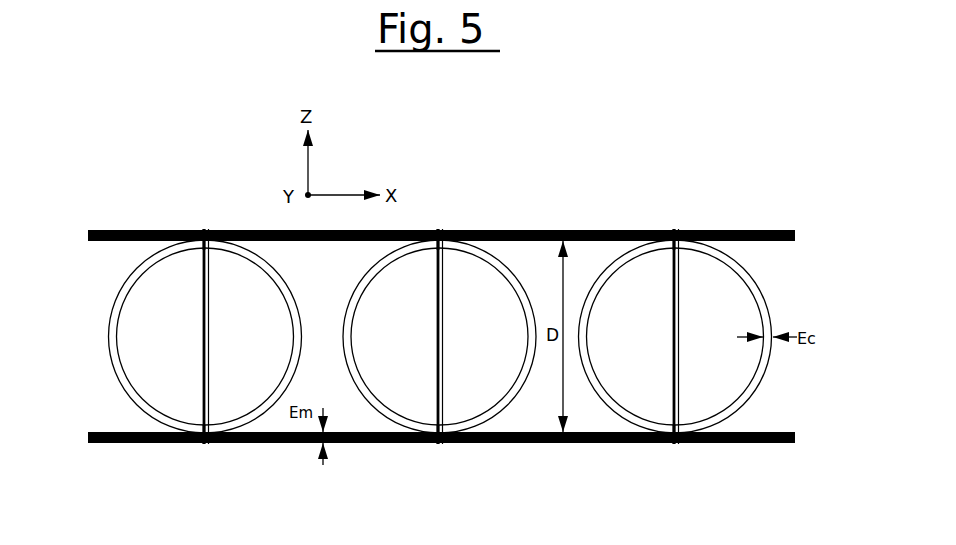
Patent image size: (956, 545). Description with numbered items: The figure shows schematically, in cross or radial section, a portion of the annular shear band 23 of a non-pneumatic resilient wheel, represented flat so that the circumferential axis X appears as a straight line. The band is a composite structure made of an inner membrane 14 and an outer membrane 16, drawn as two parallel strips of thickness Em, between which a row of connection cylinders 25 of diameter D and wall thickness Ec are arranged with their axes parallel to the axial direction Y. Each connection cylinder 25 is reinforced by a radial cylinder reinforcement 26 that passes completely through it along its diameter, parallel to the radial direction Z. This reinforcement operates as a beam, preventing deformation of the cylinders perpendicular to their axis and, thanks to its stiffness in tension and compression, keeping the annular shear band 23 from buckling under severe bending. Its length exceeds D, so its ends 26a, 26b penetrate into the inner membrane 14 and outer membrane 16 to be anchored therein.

The inner membrane 14 is at (141, 437).
The outer membrane 16 is at (112, 238).
The annular shear band 23 is at (546, 205).
The connection cylinder 25 is at (116, 321).
The radial cylinder reinforcement 26 is at (209, 392).
The end of radial cylinder reinforcement 26a is at (204, 445).
The end of radial cylinder reinforcement 26b is at (204, 231).